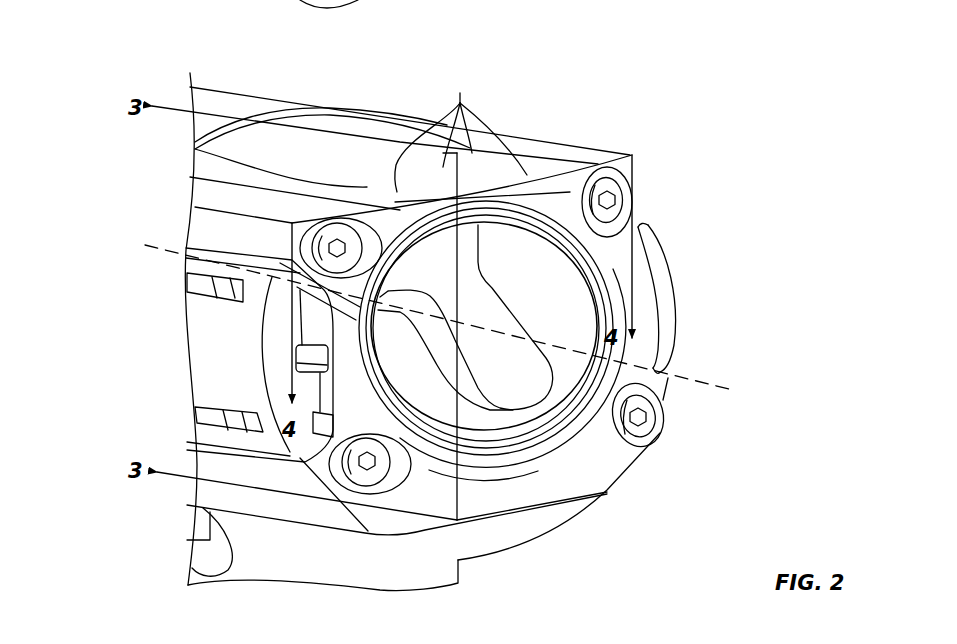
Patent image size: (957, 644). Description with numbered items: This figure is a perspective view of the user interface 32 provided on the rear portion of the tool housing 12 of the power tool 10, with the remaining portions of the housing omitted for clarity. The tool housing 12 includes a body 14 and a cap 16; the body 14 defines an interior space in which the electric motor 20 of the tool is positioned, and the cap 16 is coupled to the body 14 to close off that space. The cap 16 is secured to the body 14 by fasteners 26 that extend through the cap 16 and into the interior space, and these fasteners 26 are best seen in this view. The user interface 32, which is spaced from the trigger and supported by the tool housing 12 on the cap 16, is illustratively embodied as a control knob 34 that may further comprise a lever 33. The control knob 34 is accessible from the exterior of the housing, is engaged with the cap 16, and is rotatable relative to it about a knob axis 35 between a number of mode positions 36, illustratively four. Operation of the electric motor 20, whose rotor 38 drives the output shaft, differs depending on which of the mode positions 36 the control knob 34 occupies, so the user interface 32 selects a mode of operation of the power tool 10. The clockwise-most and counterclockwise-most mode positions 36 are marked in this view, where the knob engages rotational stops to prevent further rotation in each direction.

The power tool 10 is at (695, 52).
The tool housing 12 is at (407, 60).
The body 14 is at (403, 132).
The cap 16 is at (600, 473).
The electric motor 20 is at (205, 355).
The fasteners 26 is at (313, 247).
The user interface 32 is at (573, 82).
The lever 33 is at (480, 317).
The control knob 34 is at (533, 210).
The knob axis 35 is at (660, 367).
The mode positions 36 is at (195, 150).
The rotor 38 is at (461, 131).